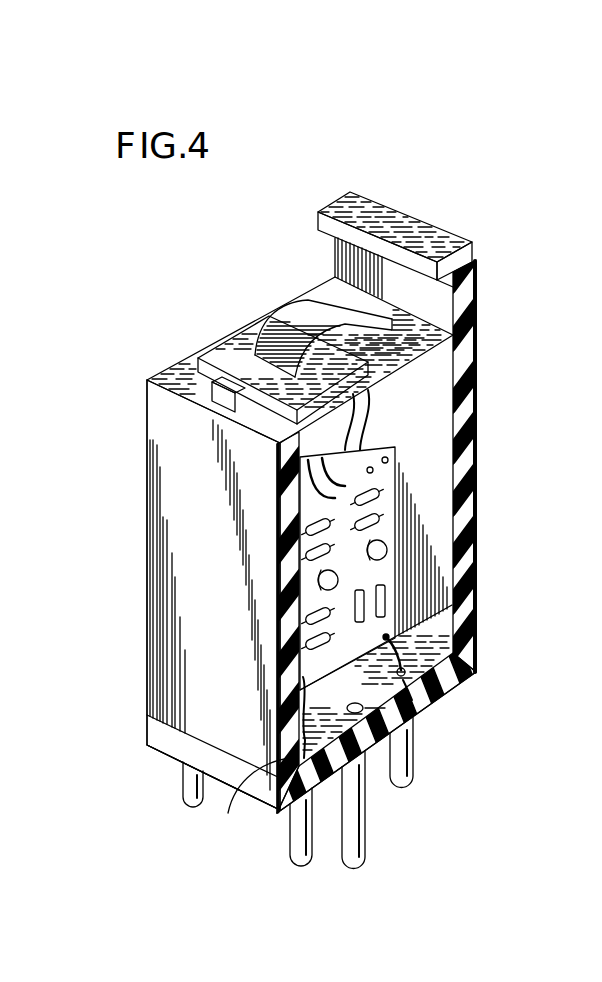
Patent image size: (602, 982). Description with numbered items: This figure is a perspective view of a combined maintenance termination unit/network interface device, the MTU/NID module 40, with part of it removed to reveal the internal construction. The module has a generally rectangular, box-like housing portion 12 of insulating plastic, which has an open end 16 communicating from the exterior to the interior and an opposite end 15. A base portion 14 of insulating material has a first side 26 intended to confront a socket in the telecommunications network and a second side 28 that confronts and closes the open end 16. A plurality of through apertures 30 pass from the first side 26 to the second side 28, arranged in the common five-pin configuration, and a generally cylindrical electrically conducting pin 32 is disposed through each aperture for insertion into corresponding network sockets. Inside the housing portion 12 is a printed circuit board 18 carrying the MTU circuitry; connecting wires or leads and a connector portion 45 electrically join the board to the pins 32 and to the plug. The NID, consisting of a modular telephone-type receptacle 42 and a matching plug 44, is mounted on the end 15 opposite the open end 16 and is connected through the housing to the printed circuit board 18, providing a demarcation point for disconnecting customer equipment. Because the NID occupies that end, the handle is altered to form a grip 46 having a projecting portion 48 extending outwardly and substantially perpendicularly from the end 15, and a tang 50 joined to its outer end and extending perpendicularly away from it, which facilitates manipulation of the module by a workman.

The housing portion 12 is at (170, 580).
The base portion 14 is at (157, 732).
The end of the housing portion 15 is at (332, 289).
The open end 16 is at (475, 658).
The printed circuit board 18 is at (386, 523).
The first side 26 is at (460, 690).
The second side 28 is at (408, 650).
The through apertures 30 is at (412, 693).
The electrically conducting element 32 is at (183, 802).
The MTU/NID module 40 is at (143, 467).
The RJ-11 receptacle 42 is at (204, 396).
The RJ-11 plug 44 is at (226, 348).
The connector portion 45 is at (283, 317).
The grip 46 is at (484, 272).
The projecting portion 48 is at (468, 302).
The tang 50 is at (372, 243).